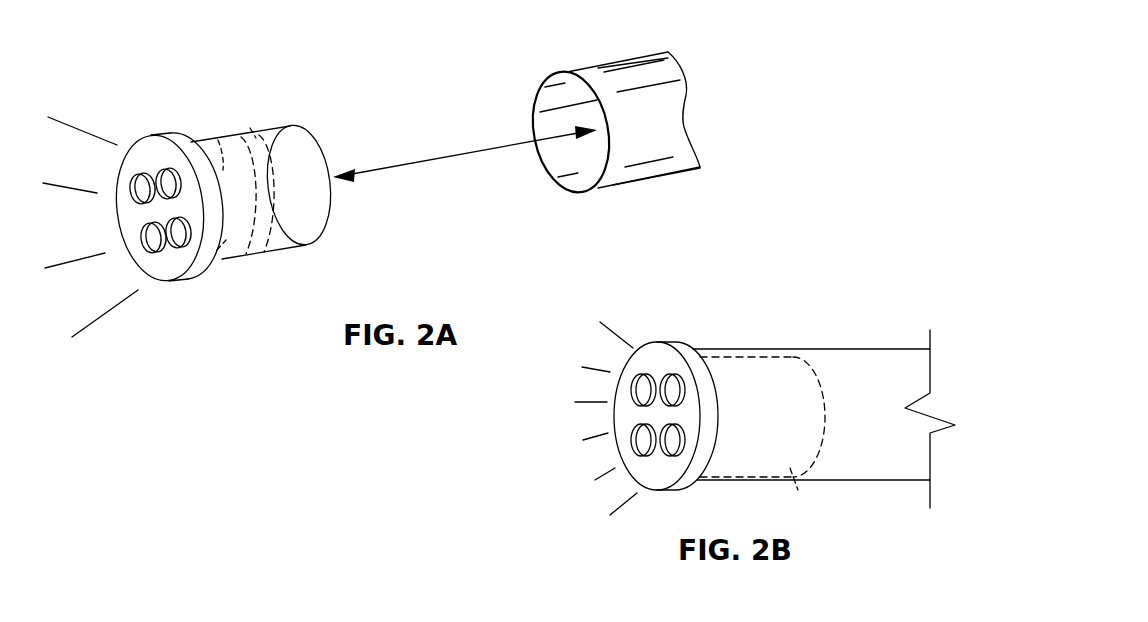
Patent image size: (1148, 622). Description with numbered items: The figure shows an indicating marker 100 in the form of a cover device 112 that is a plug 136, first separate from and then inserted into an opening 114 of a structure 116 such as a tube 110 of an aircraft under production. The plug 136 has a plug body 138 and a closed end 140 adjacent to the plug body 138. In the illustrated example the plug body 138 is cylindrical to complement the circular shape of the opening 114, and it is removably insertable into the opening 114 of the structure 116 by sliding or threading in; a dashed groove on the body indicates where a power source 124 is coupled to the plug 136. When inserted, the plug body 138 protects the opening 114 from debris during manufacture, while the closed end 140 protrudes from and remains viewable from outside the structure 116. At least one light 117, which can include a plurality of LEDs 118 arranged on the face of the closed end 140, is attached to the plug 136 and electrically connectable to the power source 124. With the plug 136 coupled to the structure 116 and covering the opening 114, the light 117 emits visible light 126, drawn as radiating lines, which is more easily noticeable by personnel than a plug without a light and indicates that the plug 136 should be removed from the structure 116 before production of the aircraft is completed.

In FIG. 2A, the connector 100 is at (204, 213).
In FIG. 2B, the connector 100 is at (646, 401).
In FIG. 2B, the tube 110 is at (840, 457).
In FIG. 2A, the cover device 112 is at (241, 129).
In FIG. 2B, the cover device 112 is at (612, 418).
In FIG. 2A, the opening 114 is at (557, 100).
In FIG. 2A, the structure 116 is at (658, 153).
In FIG. 2A, the light 117 is at (141, 257).
In FIG. 2B, the light 117 is at (641, 462).
In FIG. 2A, the LEDs 118 is at (161, 175).
In FIG. 2B, the LEDs 118 is at (668, 386).
In FIG. 2A, the power source 124 is at (258, 132).
In FIG. 2A, the visible light 126 is at (106, 321).
In FIG. 2B, the visible light 126 is at (568, 442).
In FIG. 2A, the plug 136 is at (296, 248).
In FIG. 2B, the plug 136 is at (682, 490).
In FIG. 2A, the plug body 138 is at (292, 222).
In FIG. 2B, the plug body 138 is at (793, 470).
In FIG. 2A, the closed end 140 is at (178, 273).
In FIG. 2B, the closed end 140 is at (660, 350).